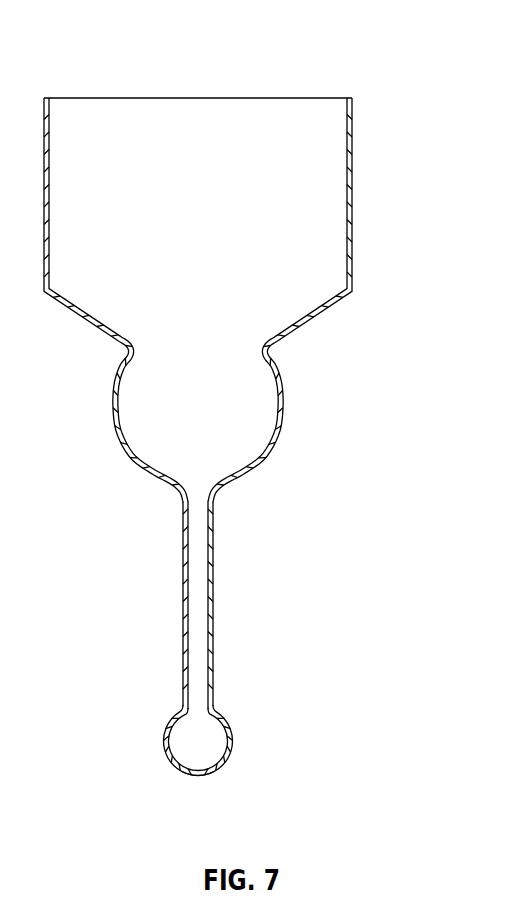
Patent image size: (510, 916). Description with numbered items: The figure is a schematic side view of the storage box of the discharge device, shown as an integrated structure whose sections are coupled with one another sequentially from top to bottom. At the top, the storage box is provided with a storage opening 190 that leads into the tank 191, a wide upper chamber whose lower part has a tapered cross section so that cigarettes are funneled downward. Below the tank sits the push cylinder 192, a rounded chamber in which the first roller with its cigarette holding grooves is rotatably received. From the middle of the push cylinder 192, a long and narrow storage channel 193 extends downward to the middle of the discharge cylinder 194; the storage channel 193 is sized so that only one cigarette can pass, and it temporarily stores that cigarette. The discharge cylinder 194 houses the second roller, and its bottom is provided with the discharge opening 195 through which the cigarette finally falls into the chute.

The storage opening 190 is at (138, 100).
The tank 191 is at (308, 196).
The push cylinder 192 is at (248, 410).
The storage channel 193 is at (202, 594).
The discharge cylinder 194 is at (220, 739).
The discharge opening 195 is at (202, 776).